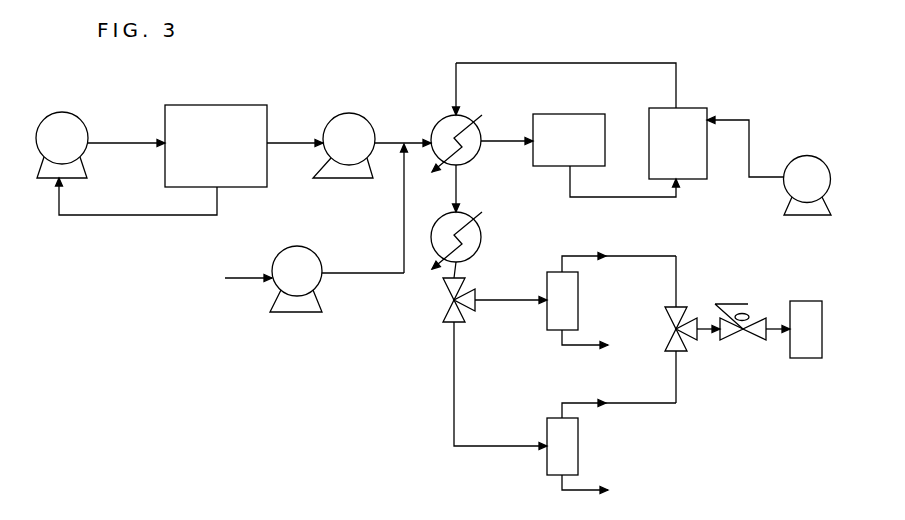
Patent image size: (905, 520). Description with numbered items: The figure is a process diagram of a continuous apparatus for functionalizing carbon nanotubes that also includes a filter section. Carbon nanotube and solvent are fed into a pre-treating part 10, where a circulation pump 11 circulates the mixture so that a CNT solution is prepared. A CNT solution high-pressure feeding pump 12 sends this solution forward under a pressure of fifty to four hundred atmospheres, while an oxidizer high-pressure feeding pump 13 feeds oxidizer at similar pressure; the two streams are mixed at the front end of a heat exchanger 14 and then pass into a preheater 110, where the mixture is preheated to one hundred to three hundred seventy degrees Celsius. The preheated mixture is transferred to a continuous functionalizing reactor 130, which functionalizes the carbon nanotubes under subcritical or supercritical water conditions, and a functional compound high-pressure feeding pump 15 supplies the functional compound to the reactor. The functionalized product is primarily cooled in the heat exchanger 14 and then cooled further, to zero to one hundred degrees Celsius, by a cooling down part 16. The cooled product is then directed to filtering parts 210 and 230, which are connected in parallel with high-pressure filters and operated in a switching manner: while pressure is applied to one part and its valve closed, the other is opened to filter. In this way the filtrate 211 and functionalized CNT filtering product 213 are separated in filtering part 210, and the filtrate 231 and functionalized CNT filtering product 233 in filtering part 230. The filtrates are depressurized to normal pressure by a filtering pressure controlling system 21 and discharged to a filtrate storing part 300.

The pre-treating part 10 is at (215, 106).
The circulation pump 11 is at (68, 112).
The CNT solution high-pressure feeding pump 12 is at (355, 113).
The oxidizer high-pressure feeding pump 13 is at (300, 246).
The heat exchanger 14 is at (471, 117).
The functional compound high-pressure feeding pump 15 is at (807, 150).
The cooling down part 16 is at (463, 211).
The preheater 110 is at (566, 114).
The functionalizing reactor 130 is at (690, 108).
The filtering pressure controlling system 21 is at (752, 312).
The filtering part 210 is at (579, 303).
The filtrate 211 is at (598, 255).
The functionalized CNT filtering product 213 is at (593, 345).
The filtering part 230 is at (579, 450).
The filtrate 231 is at (593, 403).
The functionalized CNT filtering product 233 is at (593, 490).
The filtrate storing part 300 is at (807, 301).